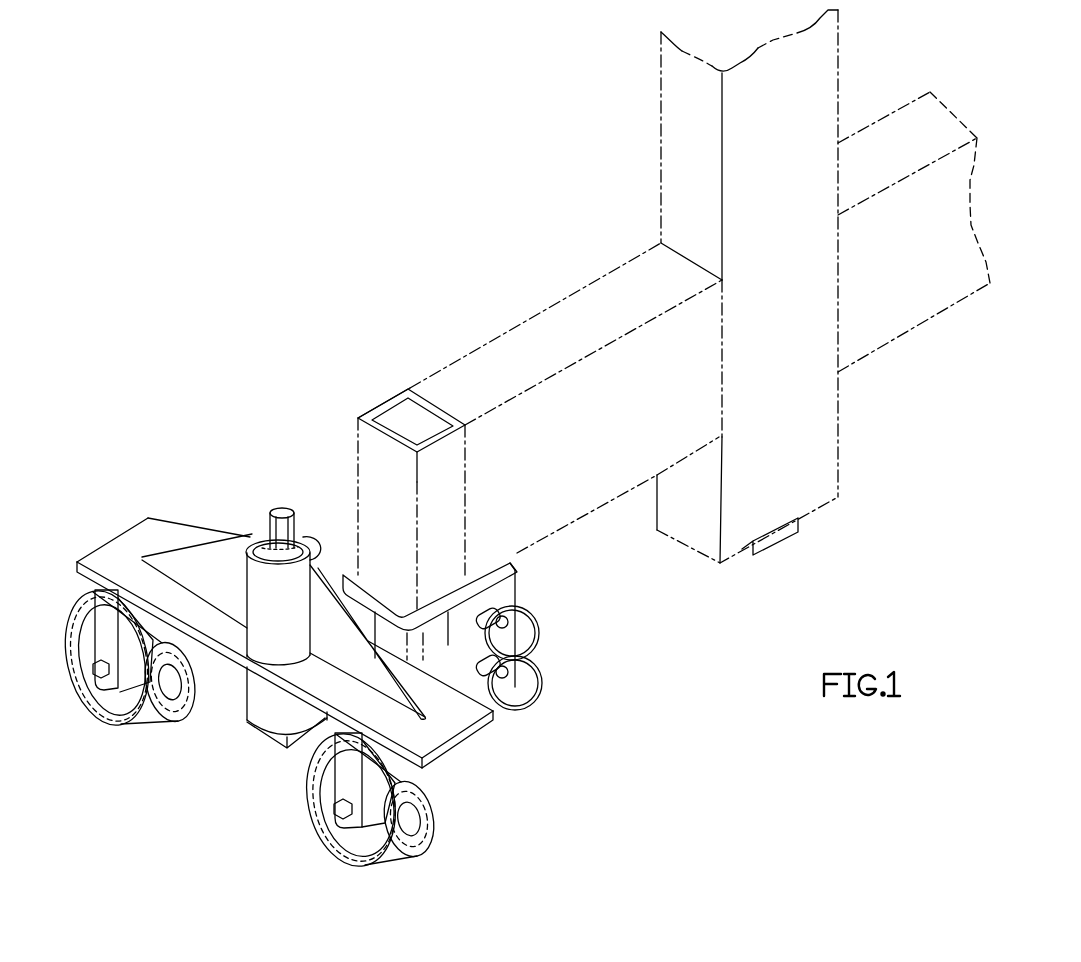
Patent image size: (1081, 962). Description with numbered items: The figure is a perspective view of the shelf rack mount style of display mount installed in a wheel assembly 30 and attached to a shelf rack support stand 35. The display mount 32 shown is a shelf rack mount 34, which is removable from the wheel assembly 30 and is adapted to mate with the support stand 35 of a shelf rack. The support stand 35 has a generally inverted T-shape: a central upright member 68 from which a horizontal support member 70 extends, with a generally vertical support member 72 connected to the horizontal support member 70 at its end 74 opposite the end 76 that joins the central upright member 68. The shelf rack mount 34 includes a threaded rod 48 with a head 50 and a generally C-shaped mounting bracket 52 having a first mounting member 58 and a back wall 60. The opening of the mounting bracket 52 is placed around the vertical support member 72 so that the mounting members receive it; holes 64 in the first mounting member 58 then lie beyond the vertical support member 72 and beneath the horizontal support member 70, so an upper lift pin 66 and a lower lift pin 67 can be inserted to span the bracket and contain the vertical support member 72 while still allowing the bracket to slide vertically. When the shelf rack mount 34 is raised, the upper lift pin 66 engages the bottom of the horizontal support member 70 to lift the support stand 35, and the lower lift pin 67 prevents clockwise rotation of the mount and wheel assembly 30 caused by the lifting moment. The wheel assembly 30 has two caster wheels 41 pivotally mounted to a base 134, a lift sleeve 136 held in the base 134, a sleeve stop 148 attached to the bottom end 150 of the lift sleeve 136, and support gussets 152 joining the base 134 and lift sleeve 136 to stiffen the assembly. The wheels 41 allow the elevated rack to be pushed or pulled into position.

The wheel assembly 30 is at (500, 783).
The display mount 32 is at (530, 597).
The shelf rack mount 34 is at (512, 688).
The support stand 35 is at (661, 166).
The wheels 41 is at (395, 855).
The threaded rod 48 is at (250, 538).
The head 50 is at (283, 512).
The mounting bracket 52 is at (518, 570).
The first mounting member 58 is at (445, 640).
The back wall 60 is at (390, 628).
The holes 64 is at (492, 690).
The upper lift pin 66 is at (540, 630).
The lower lift pin 67 is at (543, 675).
The central upright member 68 is at (806, 104).
The horizontal support member 70 is at (553, 340).
The vertical support member 72 is at (368, 462).
The end 74 is at (478, 452).
The end 76 is at (851, 277).
The base 134 is at (118, 553).
The lift sleeve 136 is at (258, 692).
The sleeve stop 148 is at (333, 735).
The bottom end 150 is at (272, 722).
The support gussets 152 is at (200, 545).